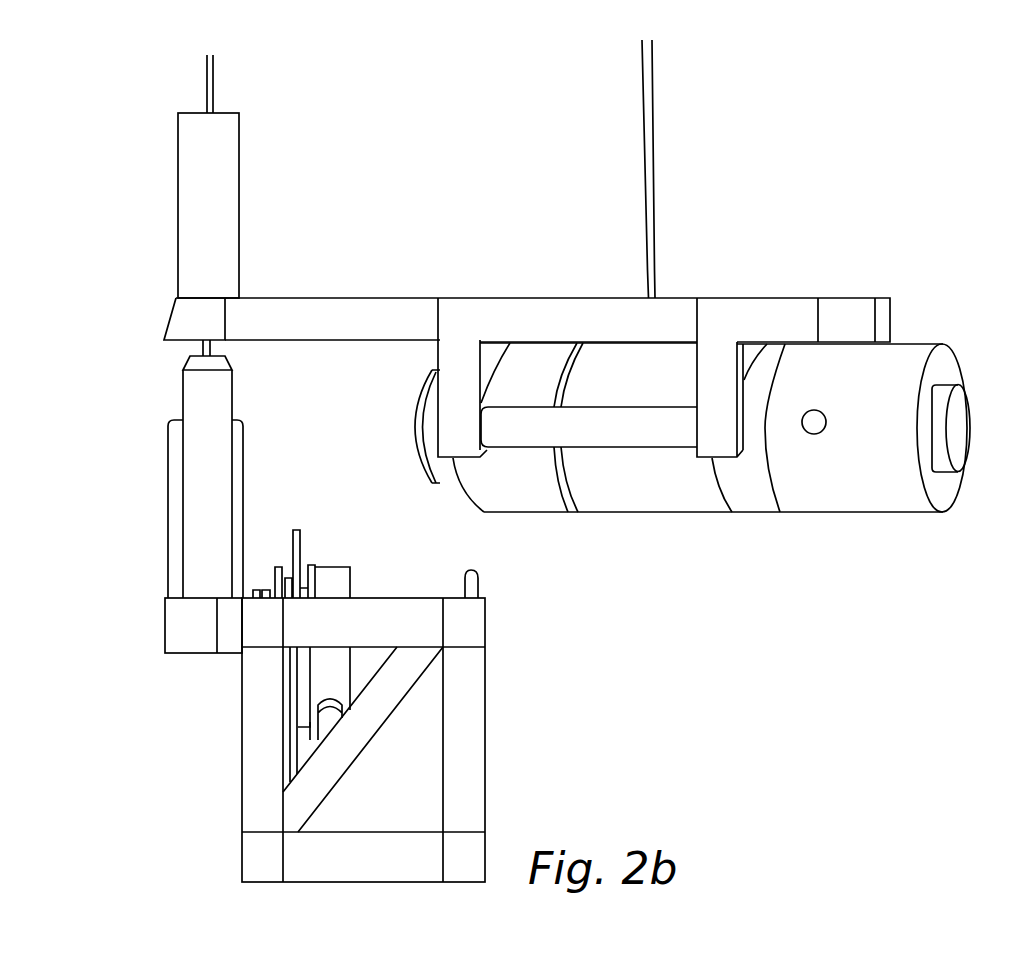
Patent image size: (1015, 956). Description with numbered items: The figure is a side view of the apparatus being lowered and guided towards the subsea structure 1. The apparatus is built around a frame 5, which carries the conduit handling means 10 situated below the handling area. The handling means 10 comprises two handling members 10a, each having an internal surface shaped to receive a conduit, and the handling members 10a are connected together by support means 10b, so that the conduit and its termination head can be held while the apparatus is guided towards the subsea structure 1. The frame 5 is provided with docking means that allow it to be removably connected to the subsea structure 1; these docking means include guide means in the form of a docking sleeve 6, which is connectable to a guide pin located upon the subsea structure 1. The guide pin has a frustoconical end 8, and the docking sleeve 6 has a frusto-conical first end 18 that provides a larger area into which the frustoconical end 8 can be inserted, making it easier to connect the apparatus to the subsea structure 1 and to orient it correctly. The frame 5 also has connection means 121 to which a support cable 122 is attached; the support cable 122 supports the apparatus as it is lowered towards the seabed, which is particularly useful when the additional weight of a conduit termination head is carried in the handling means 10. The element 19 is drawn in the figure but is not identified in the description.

The subsea structure 1 is at (163, 643).
The frame 5 is at (385, 298).
The docking sleeve 6 is at (233, 145).
The frustoconical end 8 is at (190, 387).
The conduit handling means 10 is at (677, 467).
The handling members 10a is at (442, 478).
The support means 10b is at (670, 513).
The first end 18 is at (177, 307).
The wires 19 is at (208, 83).
The connection means 121 is at (657, 298).
The support cable 122 is at (652, 102).